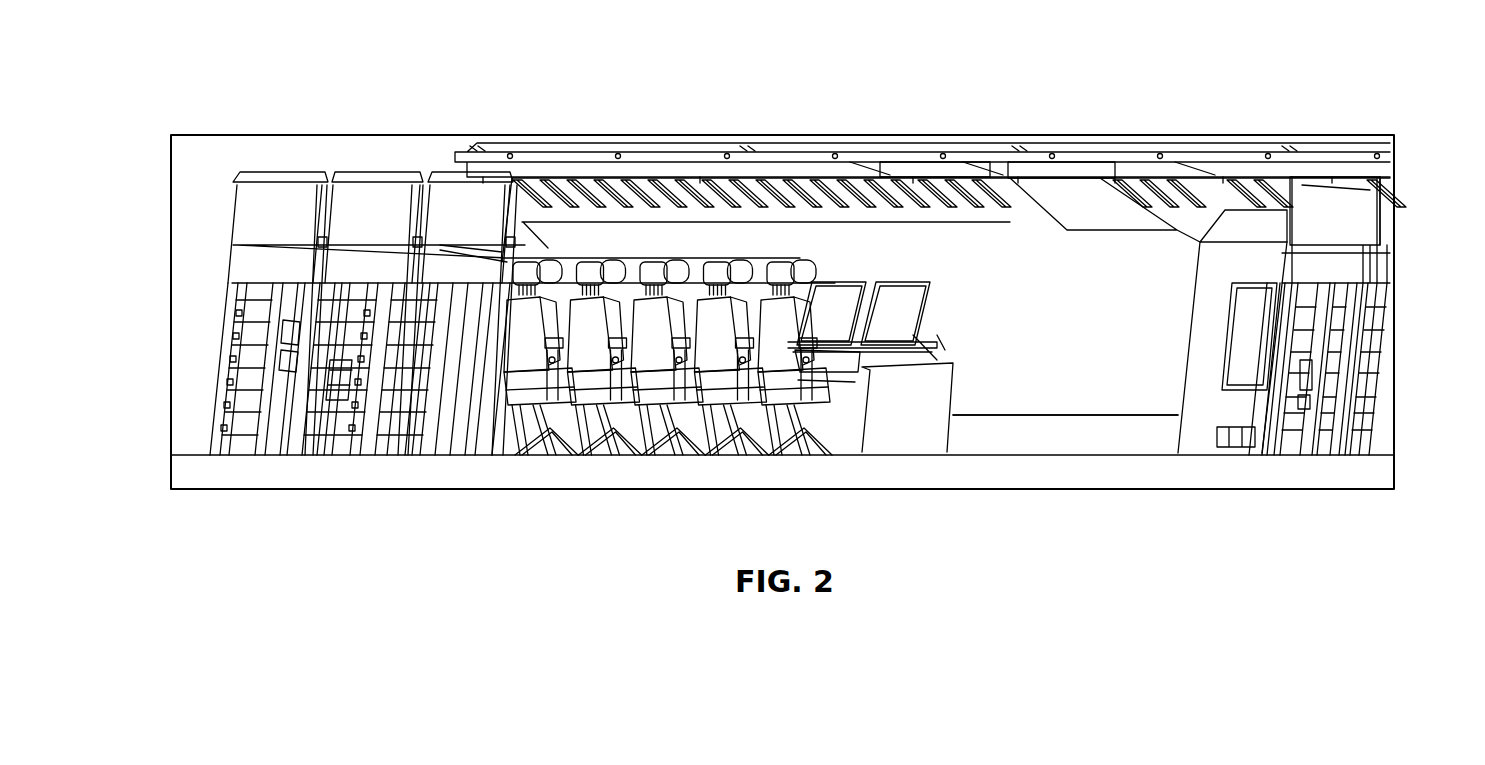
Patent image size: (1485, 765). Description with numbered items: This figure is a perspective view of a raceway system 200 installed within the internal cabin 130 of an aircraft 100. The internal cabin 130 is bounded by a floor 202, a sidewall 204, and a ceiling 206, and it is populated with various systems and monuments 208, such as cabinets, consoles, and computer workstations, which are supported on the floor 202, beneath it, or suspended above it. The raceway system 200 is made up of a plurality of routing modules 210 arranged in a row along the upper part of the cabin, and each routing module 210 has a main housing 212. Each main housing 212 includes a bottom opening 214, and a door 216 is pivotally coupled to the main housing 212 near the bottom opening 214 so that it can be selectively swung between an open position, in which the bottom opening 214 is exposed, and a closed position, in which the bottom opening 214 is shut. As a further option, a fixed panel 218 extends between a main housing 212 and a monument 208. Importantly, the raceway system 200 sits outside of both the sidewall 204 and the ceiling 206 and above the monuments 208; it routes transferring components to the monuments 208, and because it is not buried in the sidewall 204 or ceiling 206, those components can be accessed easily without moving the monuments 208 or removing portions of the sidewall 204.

The aircraft 100 is at (623, 80).
The internal cabin 130 is at (212, 230).
The raceway system 200 is at (1263, 132).
The floor 202 is at (878, 470).
The sidewall 204 is at (1096, 365).
The ceiling 206 is at (898, 142).
The monument 208 is at (217, 413).
The routing module 210 is at (535, 168).
The main housing 212 is at (580, 207).
The bottom opening 214 is at (622, 196).
The door 216 is at (790, 165).
The fixed panel 218 is at (1343, 200).